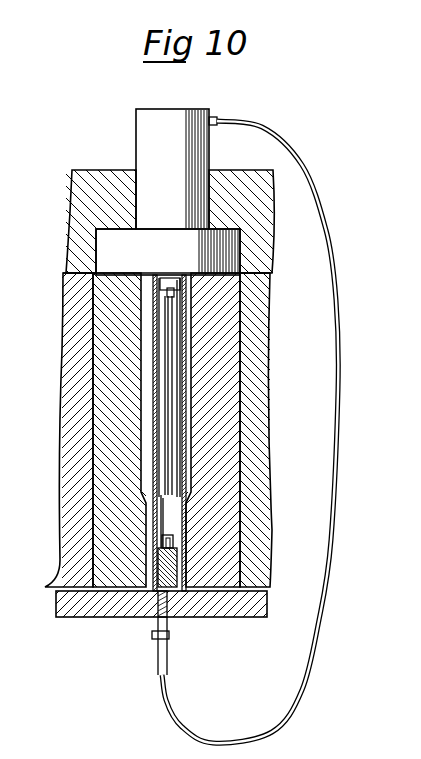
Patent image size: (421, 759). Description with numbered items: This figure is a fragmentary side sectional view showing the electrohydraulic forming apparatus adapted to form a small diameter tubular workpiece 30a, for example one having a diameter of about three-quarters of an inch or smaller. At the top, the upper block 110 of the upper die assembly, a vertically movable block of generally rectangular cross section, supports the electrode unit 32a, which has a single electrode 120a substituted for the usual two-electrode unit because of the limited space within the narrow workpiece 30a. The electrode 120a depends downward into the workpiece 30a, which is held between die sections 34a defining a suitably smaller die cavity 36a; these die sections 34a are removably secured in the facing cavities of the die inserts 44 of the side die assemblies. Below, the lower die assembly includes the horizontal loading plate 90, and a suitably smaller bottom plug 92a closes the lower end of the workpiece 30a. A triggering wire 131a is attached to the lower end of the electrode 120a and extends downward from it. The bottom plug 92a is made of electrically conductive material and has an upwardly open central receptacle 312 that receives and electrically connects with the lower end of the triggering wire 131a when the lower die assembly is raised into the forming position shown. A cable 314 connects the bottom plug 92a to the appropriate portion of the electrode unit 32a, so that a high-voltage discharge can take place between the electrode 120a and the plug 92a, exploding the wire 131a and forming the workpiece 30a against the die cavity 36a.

The electrode unit 32a is at (134, 160).
The upper block 110 is at (72, 185).
The small diameter tubular workpiece 30a is at (148, 352).
The die sections 34a is at (115, 295).
The die cavity 36a is at (147, 396).
The die inserts 44 is at (62, 447).
The electrode 120a is at (170, 410).
The triggering wire 131a is at (162, 522).
The central receptacle 312 is at (172, 535).
The bottom plug 92a is at (152, 580).
The loading plate 90 is at (58, 605).
The cable 314 is at (300, 660).